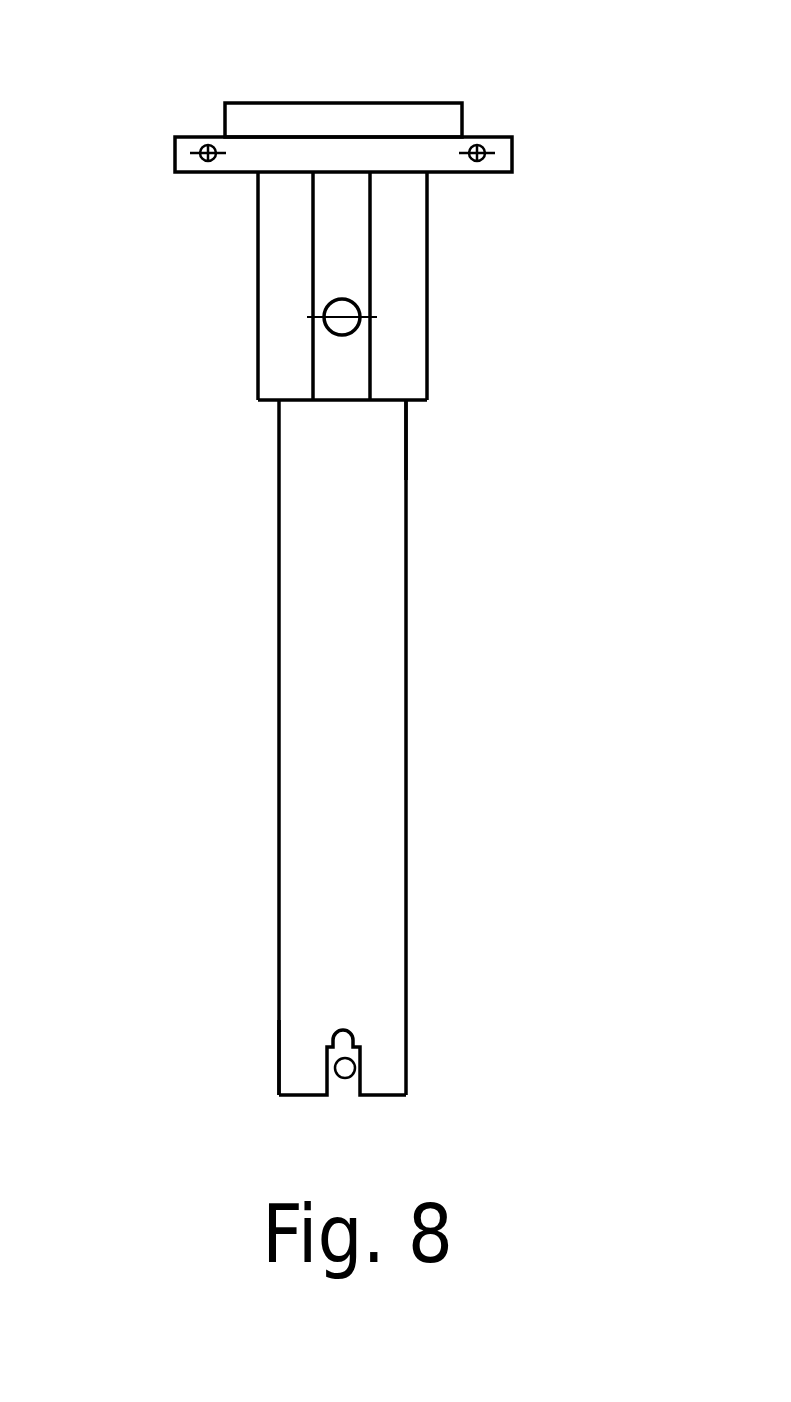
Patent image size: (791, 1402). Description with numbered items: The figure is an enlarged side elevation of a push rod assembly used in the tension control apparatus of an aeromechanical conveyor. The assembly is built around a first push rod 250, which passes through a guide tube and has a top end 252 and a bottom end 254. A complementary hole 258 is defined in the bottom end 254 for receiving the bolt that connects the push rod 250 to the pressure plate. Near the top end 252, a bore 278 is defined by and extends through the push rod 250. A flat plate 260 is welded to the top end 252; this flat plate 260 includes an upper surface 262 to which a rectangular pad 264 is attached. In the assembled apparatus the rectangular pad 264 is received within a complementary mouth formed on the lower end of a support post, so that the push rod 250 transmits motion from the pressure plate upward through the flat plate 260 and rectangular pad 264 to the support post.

The first push rod 250 is at (407, 778).
The top end 252 is at (406, 424).
The bottom end 254 is at (279, 1033).
The complementary hole 258 is at (362, 1075).
The flat plate 260 is at (510, 172).
The upper surface 262 is at (493, 137).
The rectangular pad 264 is at (377, 103).
The bore 278 is at (352, 309).